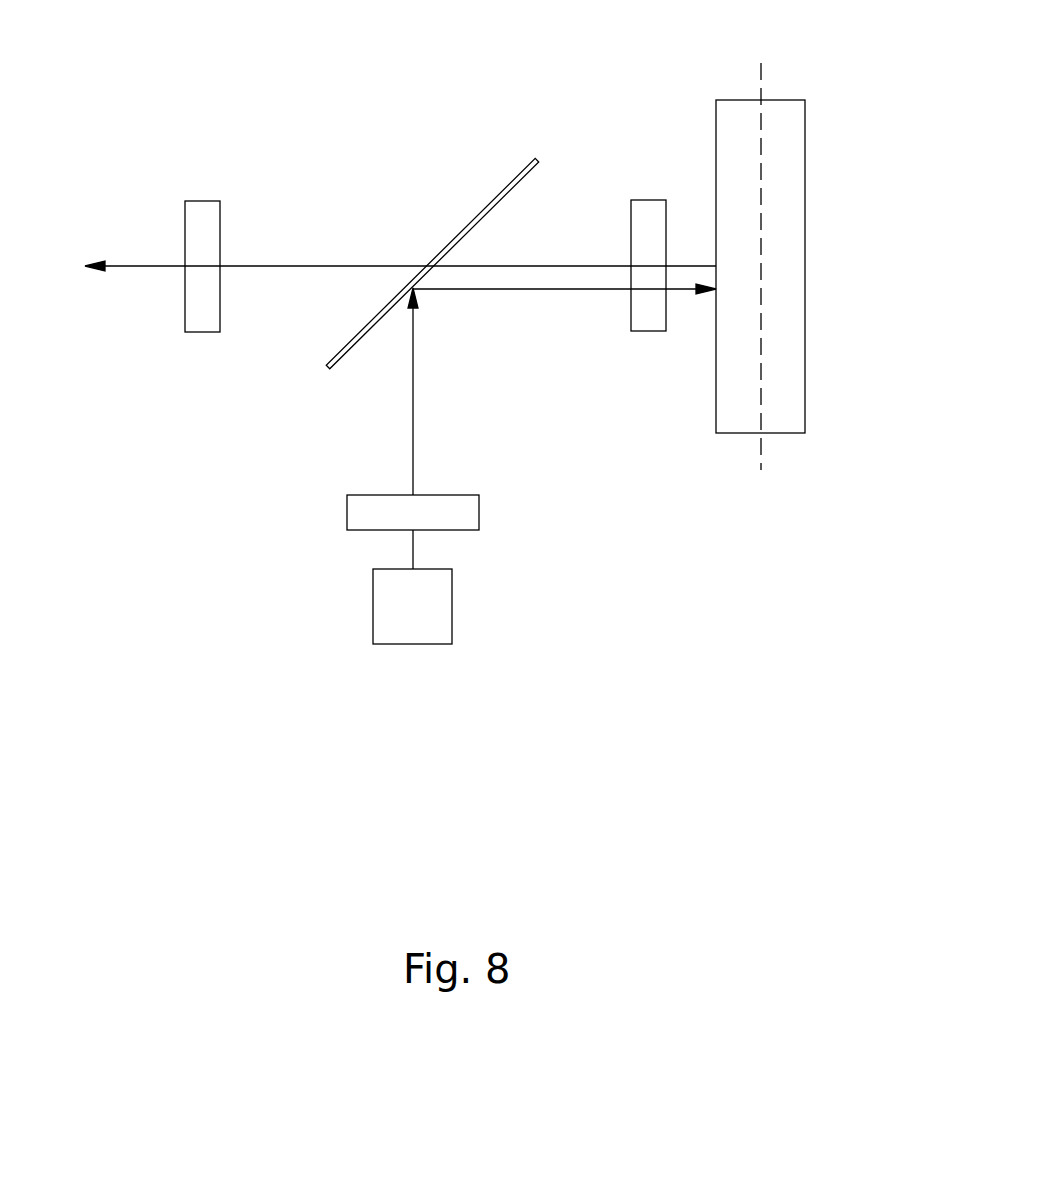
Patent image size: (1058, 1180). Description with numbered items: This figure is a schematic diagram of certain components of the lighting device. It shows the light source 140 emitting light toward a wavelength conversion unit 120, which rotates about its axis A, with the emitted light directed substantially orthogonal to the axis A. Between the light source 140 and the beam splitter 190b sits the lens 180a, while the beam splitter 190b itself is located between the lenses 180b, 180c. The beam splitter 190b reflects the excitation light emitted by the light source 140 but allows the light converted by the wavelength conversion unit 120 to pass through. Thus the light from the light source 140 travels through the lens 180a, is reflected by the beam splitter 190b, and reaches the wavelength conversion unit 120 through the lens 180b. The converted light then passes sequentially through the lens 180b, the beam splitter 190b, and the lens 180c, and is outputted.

The wavelength conversion unit 120 is at (735, 113).
The light source 140 is at (452, 607).
The lens 180a is at (467, 513).
The lens 180b is at (650, 217).
The lens 180c is at (201, 217).
The beam splitter 190b is at (537, 158).
The axis A is at (761, 82).